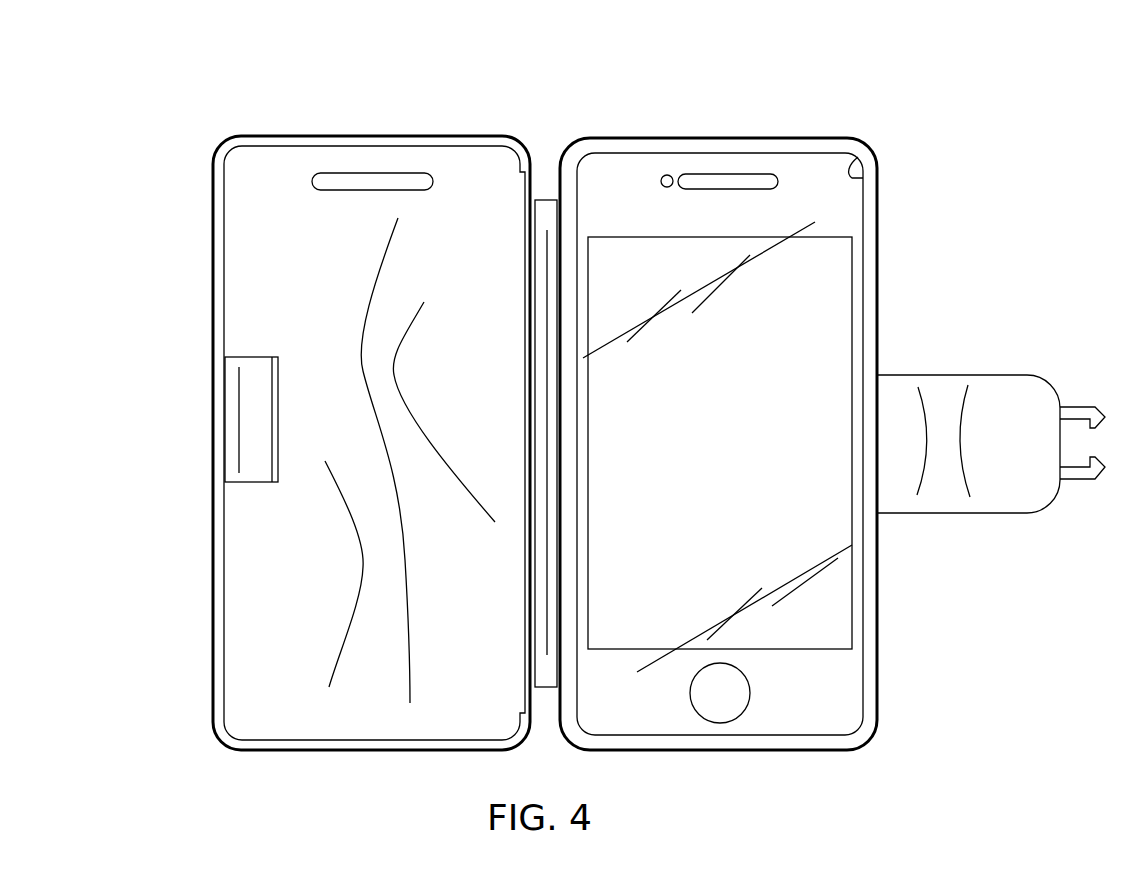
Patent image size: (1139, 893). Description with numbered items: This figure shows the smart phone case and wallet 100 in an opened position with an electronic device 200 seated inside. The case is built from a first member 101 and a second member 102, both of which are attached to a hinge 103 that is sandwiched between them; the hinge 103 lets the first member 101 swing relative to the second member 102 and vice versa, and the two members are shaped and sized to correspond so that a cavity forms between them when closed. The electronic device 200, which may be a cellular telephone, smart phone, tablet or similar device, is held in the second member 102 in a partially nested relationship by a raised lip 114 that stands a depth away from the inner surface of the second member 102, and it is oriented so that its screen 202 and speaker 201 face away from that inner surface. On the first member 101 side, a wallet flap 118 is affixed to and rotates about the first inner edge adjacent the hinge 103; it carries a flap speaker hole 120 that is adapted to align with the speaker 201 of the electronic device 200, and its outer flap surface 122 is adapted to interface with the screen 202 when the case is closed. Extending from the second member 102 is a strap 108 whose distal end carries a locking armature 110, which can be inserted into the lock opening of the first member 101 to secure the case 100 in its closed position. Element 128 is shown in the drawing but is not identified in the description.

The smart phone case and wallet 100 is at (1005, 142).
The first member 101 is at (313, 135).
The second member 102 is at (657, 137).
The hinge 103 is at (545, 200).
The strap 108 is at (964, 375).
The locking armature 110 is at (1097, 407).
The raised lip 114 is at (863, 178).
The wallet flap 118 is at (226, 264).
The flap speaker hole 120 is at (385, 173).
The outer flap surface 122 is at (262, 327).
The card 128 is at (253, 482).
The electronic device 200 is at (817, 178).
The speaker 201 is at (735, 175).
The screen 202 is at (852, 305).